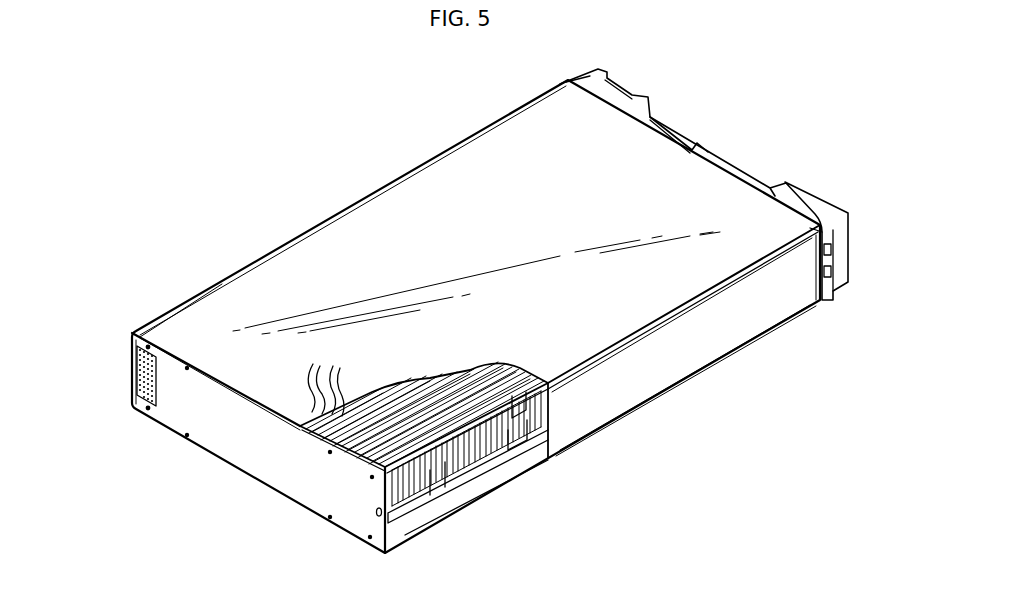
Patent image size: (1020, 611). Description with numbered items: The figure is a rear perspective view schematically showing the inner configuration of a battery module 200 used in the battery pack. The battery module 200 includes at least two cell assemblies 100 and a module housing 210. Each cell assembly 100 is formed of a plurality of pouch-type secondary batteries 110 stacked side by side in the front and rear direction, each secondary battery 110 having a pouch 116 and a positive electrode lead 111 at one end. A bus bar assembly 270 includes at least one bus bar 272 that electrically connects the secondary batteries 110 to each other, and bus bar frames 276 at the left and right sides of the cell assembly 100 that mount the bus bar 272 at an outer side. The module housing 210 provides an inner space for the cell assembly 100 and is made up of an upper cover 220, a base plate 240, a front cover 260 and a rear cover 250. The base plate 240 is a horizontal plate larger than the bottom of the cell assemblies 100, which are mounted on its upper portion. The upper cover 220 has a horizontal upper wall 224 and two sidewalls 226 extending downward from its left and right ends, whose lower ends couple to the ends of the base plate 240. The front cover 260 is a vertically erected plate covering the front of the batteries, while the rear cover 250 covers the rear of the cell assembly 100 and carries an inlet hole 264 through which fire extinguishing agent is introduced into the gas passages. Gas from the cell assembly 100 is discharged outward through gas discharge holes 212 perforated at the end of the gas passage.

The battery module 200 is at (226, 116).
The module housing 210 is at (346, 200).
The sidewall 226 is at (222, 280).
The gas discharge holes 212 is at (136, 377).
The rear cover 250 is at (246, 451).
The inlet hole 264 is at (374, 516).
The cell assembly 100 is at (410, 386).
The pouch 116 is at (380, 397).
The secondary battery 110 is at (322, 379).
The positive electrode lead 111 is at (407, 485).
The base plate 240 is at (453, 518).
The bus bar frame 276 is at (520, 396).
The bus bar 272 is at (520, 438).
The bus bar assembly 270 is at (600, 460).
The upper wall 224 is at (583, 338).
The upper cover 220 is at (740, 372).
The front cover 260 is at (738, 167).